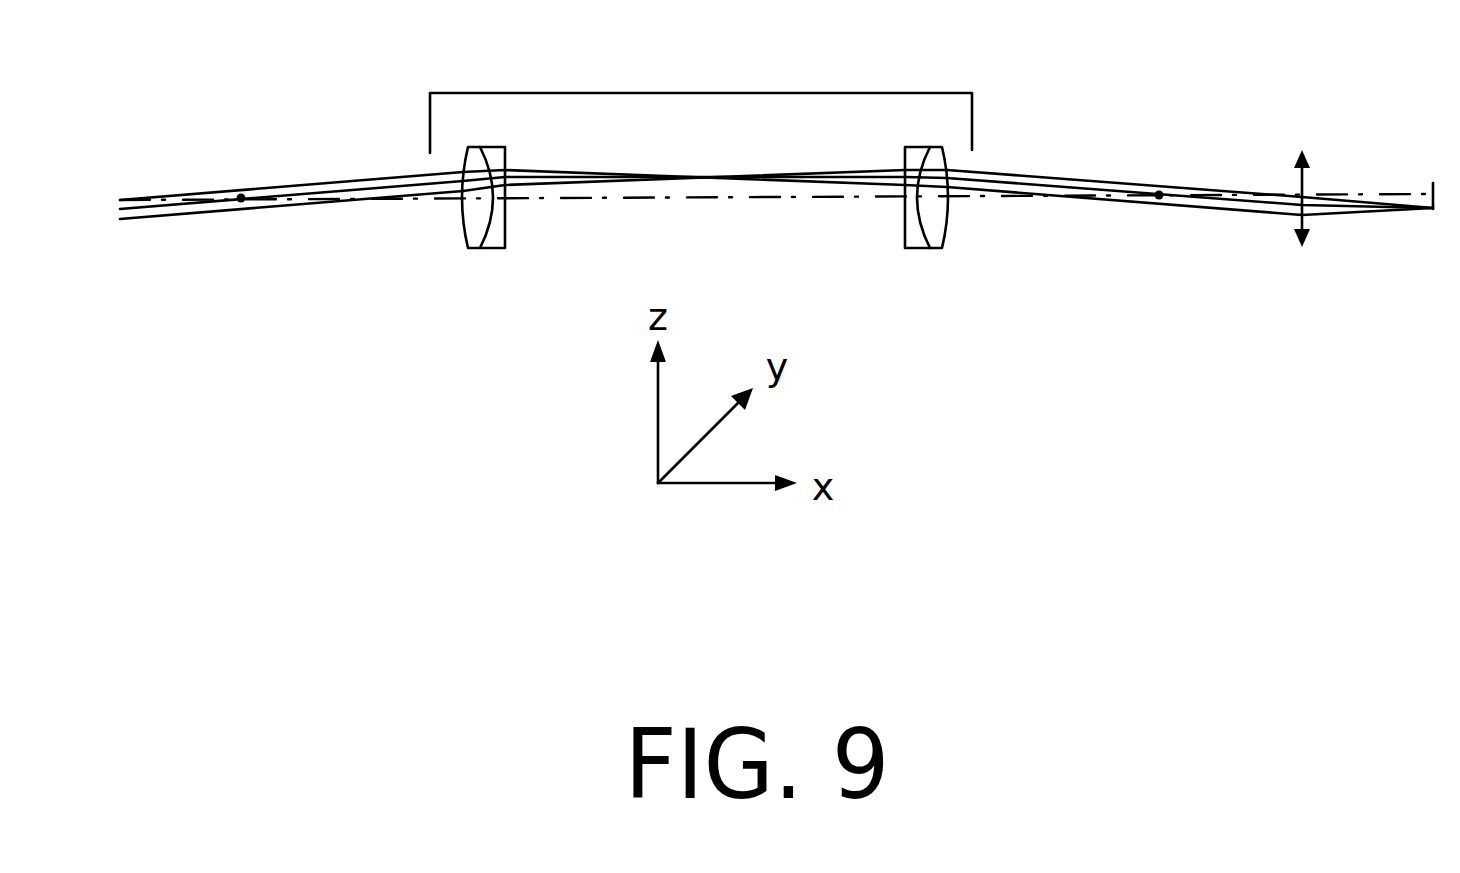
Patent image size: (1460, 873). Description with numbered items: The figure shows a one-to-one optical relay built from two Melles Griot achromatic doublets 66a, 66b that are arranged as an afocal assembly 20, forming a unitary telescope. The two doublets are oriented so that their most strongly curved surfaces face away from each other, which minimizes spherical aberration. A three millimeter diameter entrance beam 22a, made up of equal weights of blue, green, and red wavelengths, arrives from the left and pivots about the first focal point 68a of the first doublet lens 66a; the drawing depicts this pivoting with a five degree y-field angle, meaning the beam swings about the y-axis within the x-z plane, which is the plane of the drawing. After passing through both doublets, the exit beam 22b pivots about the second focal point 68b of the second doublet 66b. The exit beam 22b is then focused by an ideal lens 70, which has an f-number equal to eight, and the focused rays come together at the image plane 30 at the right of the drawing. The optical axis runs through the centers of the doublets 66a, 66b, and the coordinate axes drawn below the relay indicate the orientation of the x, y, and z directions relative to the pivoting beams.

The relay lens assembly 20 is at (640, 93).
The entrance beam 22a is at (167, 219).
The exit beam 22b is at (1061, 178).
The image plane 30 is at (1340, 193).
The first doublet lens 66a is at (490, 248).
The second doublet 66b is at (935, 248).
The first focal point 68a is at (242, 198).
The second focal point 68b is at (1160, 195).
The ideal lens 70 is at (1302, 247).